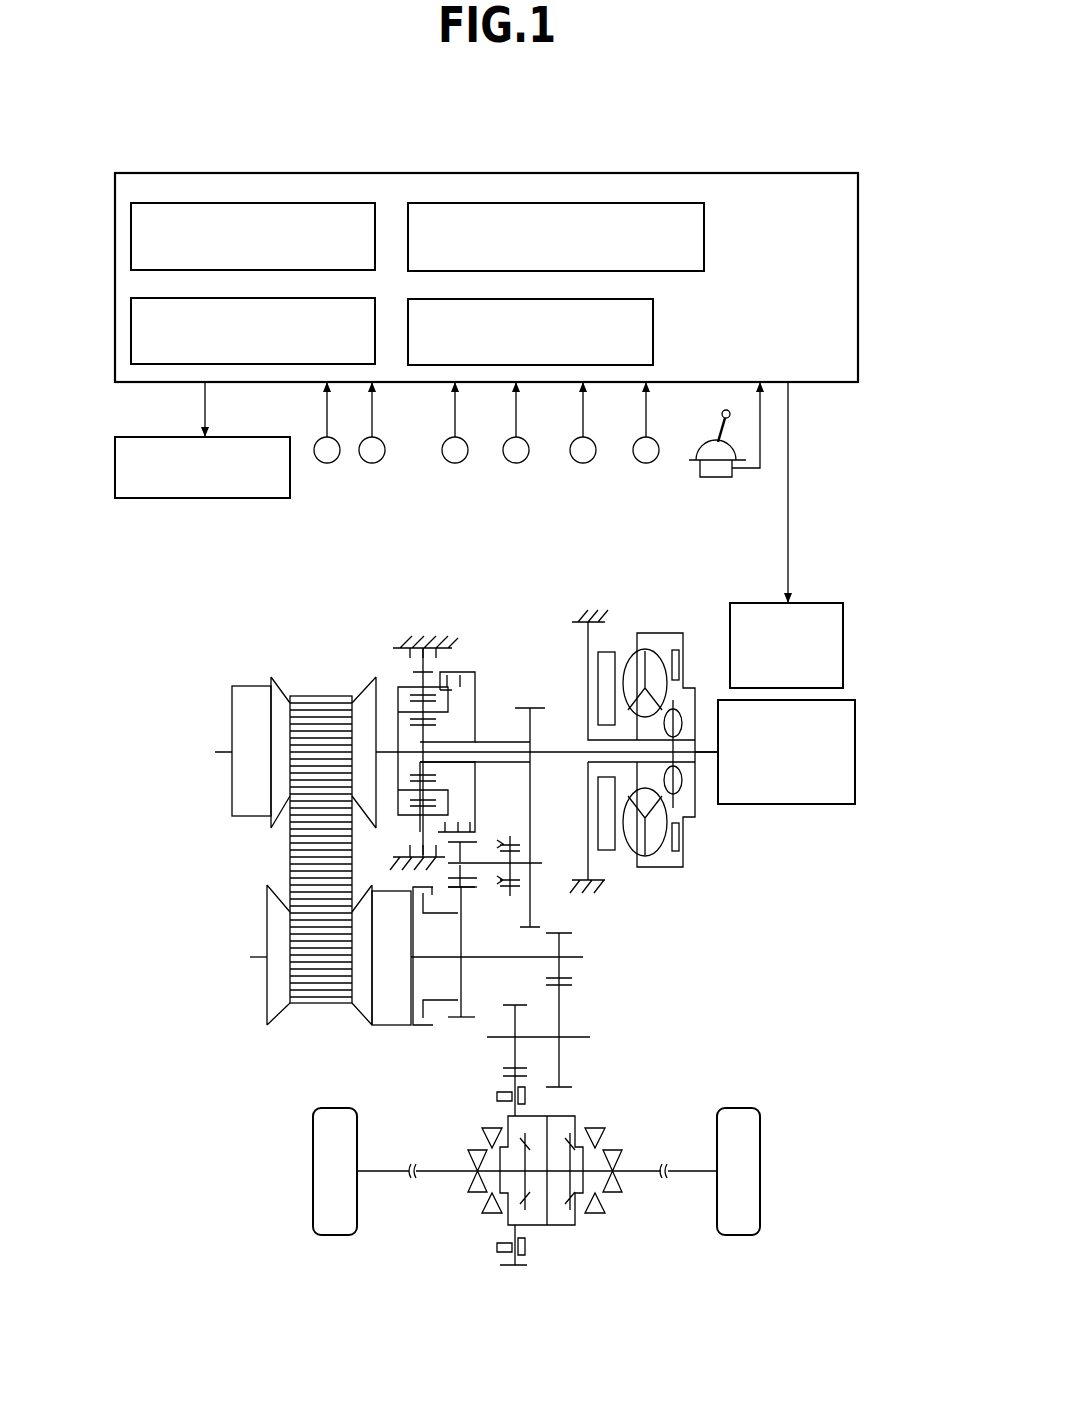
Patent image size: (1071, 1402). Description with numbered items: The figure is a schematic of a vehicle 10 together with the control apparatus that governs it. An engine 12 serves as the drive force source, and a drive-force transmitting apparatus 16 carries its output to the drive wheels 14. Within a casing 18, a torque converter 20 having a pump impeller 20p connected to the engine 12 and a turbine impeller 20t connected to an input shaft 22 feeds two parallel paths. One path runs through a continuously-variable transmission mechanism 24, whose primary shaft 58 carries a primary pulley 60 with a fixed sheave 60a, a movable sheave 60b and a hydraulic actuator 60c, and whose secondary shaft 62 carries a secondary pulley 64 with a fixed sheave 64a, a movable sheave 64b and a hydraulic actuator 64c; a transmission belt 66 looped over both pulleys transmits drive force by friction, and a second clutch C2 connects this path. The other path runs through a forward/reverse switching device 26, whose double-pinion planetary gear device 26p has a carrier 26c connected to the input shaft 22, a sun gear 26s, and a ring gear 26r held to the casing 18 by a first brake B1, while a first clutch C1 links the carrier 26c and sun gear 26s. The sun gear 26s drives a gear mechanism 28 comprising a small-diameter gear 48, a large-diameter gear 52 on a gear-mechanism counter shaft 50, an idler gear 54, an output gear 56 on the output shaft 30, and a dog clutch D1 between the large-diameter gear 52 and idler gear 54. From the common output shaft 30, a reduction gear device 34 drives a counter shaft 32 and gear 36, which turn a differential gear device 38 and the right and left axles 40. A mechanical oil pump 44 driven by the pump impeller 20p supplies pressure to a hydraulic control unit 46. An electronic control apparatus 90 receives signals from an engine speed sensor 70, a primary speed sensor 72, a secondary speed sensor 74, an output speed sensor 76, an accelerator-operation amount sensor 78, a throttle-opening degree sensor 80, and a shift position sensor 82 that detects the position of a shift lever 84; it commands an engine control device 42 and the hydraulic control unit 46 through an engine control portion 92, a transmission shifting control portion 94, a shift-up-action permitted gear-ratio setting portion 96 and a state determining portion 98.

The vehicle 10 is at (757, 92).
The engine 12 is at (805, 797).
The drive wheels 14 is at (336, 1118).
The drive-force transmitting apparatus 16 is at (667, 560).
The casing 18 is at (395, 575).
The torque converter 20 is at (656, 743).
The pump impeller 20p is at (640, 860).
The turbine impeller 20t is at (660, 835).
The input shaft 22 is at (562, 750).
The continuously-variable transmission mechanism 24 is at (318, 640).
The forward/reverse switching device 26 is at (462, 640).
The planetary gear device 26p is at (412, 655).
The ring gear 26r is at (402, 662).
The carrier 26c is at (432, 718).
The sun gear 26s is at (440, 775).
The gear mechanism 28 is at (538, 655).
The output shaft 30 is at (484, 958).
The counter shaft 32 is at (575, 1037).
The reduction gear device 34 is at (578, 964).
The gear 36 is at (505, 1005).
The differential gear device 38 is at (545, 1230).
The axles 40 is at (428, 1170).
The engine control device 42 is at (815, 605).
The oil pump 44 is at (608, 652).
The hydraulic control unit 46 is at (240, 440).
The small-diameter gear 48 is at (522, 706).
The gear-mechanism counter shaft 50 is at (535, 863).
The large-diameter gear 52 is at (520, 928).
The idler gear 54 is at (478, 890).
The output gear 56 is at (462, 1018).
The primary shaft 58 is at (217, 752).
The primary pulley 60 is at (277, 737).
The fixed sheave 60a is at (362, 696).
The movable sheave 60b is at (283, 696).
The hydraulic actuator 60c is at (257, 688).
The secondary shaft 62 is at (252, 957).
The secondary pulley 64 is at (317, 978).
The fixed sheave 64a is at (278, 1012).
The movable sheave 64b is at (360, 1015).
The hydraulic actuator 64c is at (390, 1025).
The transmission belt 66 is at (318, 1003).
The engine speed sensor 70 is at (327, 464).
The primary speed sensor 72 is at (372, 464).
The secondary speed sensor 74 is at (455, 464).
The output speed sensor 76 is at (516, 464).
The accelerator-operation amount sensor 78 is at (583, 464).
The throttle-opening degree sensor 80 is at (646, 464).
The shift position sensor 82 is at (720, 447).
The shift lever 84 is at (724, 445).
The electronic control apparatus 90 is at (797, 181).
The engine control portion 92 is at (331, 209).
The transmission shifting control portion 94 is at (331, 304).
The shift-up-action permitted gear-ratio setting portion 96 is at (611, 209).
The state determining portion 98 is at (611, 304).
The first clutch C1 is at (450, 693).
The second clutch C2 is at (435, 971).
The first brake B1 is at (427, 808).
The dog clutch D1 is at (505, 835).